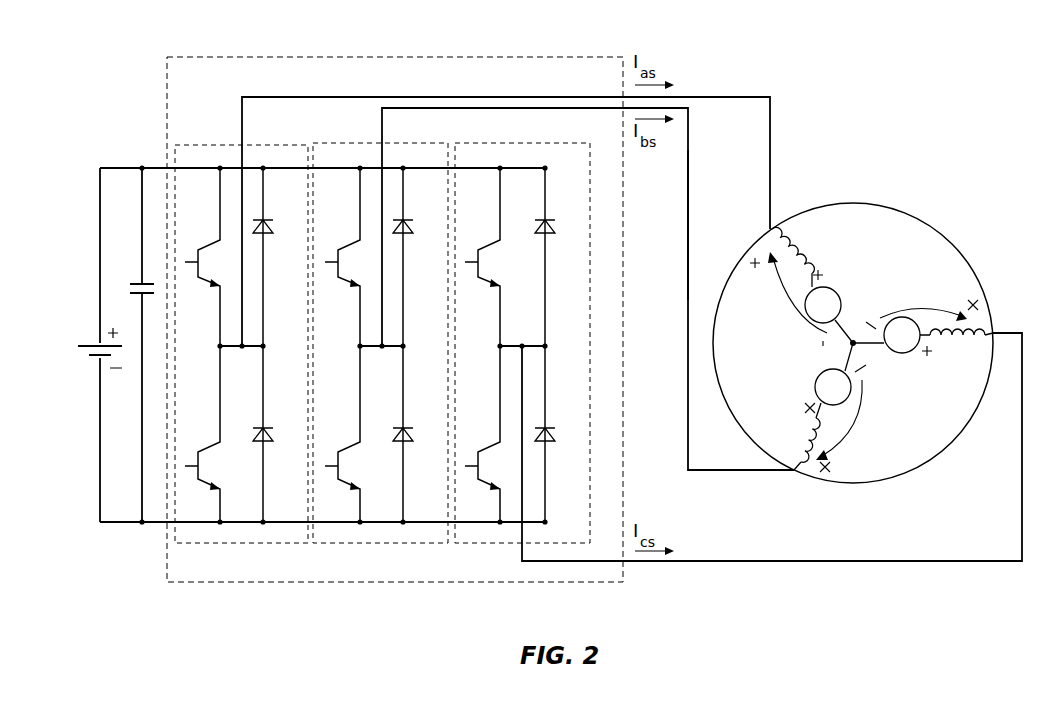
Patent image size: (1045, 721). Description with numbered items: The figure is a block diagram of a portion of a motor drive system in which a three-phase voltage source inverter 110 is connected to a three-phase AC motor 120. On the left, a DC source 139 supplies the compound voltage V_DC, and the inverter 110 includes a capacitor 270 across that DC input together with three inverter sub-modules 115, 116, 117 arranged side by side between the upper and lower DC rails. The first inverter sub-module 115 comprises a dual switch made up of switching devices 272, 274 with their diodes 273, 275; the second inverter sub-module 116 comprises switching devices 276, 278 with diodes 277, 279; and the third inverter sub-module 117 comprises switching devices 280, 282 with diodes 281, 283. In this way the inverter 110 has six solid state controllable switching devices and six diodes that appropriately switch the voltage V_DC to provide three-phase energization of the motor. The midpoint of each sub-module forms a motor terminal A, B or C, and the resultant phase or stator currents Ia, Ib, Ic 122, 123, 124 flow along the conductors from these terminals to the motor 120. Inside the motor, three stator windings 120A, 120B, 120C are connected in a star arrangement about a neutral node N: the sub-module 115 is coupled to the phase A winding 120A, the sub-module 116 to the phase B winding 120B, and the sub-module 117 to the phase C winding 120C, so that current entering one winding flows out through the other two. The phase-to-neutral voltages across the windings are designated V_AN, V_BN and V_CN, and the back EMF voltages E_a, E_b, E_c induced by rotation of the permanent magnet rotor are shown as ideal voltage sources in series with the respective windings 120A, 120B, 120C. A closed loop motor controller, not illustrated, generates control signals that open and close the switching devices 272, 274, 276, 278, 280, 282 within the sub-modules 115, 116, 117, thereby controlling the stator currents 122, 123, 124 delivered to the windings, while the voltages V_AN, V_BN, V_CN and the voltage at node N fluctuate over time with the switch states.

The three-phase voltage source inverter 110 is at (226, 58).
The first inverter sub-module 115 is at (233, 145).
The second inverter sub-module 116 is at (373, 143).
The third inverter sub-module 117 is at (513, 143).
The three-phase AC motor 120 is at (883, 204).
The phase A stator winding 120A is at (800, 245).
The phase B stator winding 120B is at (792, 452).
The phase C stator winding 120C is at (955, 345).
The phase A stator current 122 is at (752, 96).
The phase B stator current 123 is at (690, 184).
The phase C stator current 124 is at (809, 560).
The DC voltage source 139 is at (88, 345).
The capacitor 270 is at (140, 283).
The solid state controllable switching device 272 is at (216, 238).
The diode 273 is at (266, 220).
The solid state controllable switching device 274 is at (216, 441).
The diode 275 is at (266, 428).
The solid state controllable switching device 276 is at (356, 238).
The diode 277 is at (406, 220).
The solid state controllable switching device 278 is at (356, 441).
The diode 279 is at (406, 428).
The solid state controllable switching device 280 is at (488, 262).
The diode 281 is at (543, 220).
The solid state controllable switching device 282 is at (496, 441).
The diode 283 is at (548, 428).